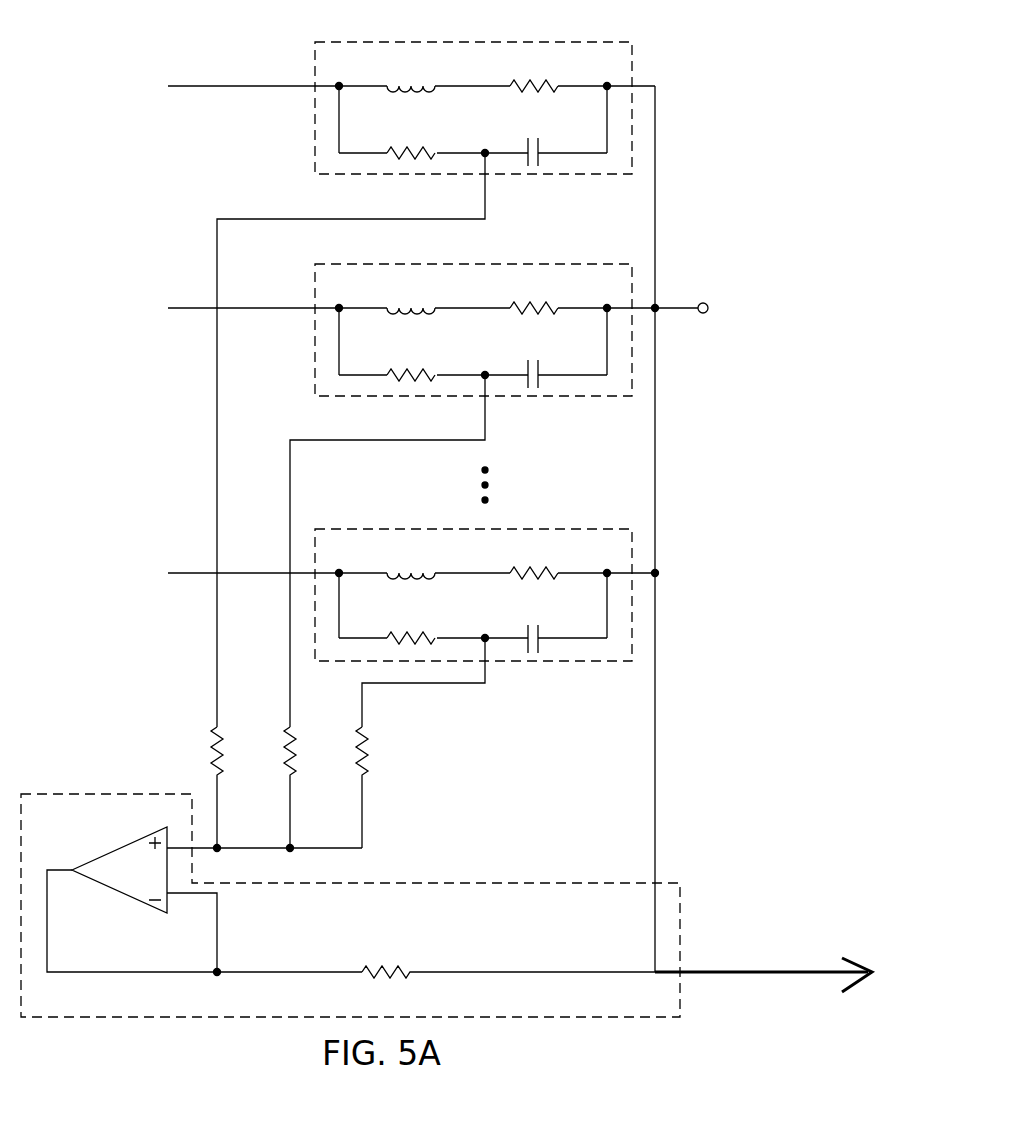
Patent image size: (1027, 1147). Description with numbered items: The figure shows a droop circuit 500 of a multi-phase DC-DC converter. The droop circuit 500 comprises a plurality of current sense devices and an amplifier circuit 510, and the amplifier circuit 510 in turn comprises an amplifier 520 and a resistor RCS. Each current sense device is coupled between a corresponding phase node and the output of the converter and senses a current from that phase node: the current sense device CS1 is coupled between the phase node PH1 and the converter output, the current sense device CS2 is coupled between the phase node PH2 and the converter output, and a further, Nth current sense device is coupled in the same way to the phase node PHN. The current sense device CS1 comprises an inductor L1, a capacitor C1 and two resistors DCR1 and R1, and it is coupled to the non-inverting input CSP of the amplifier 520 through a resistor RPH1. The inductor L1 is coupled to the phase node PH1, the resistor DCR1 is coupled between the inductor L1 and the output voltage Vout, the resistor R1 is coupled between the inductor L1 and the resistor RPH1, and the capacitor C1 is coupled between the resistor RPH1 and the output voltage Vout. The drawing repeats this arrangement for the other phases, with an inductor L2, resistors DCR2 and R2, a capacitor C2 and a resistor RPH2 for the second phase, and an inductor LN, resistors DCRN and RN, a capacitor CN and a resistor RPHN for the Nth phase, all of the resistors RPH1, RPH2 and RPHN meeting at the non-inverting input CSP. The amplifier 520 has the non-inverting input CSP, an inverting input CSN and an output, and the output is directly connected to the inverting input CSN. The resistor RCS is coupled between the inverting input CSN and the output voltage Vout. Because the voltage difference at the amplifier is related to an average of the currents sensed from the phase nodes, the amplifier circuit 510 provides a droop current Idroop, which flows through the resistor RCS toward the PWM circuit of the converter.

The droop circuit 500 is at (90, 39).
The amplifier circuit 510 is at (105, 790).
The amplifier 520 is at (120, 845).
The phase node PH1 is at (250, 86).
The phase node PH2 is at (250, 308).
The phase node PHN is at (250, 573).
The current sense device CS1 is at (560, 41).
The current sense device CS2 is at (560, 263).
The inductor L1 is at (393, 84).
The inductor L2 is at (393, 306).
The inductor LN is at (393, 571).
The resistor DCR1 is at (522, 84).
The resistor DCR2 is at (522, 306).
The resistor DCRN is at (522, 571).
The resistor R1 is at (396, 152).
The resistor R2 is at (396, 374).
The resistor RN is at (396, 637).
The capacitor C1 is at (536, 142).
The capacitor C2 is at (536, 364).
The capacitor CN is at (536, 628).
The resistor RPH1 is at (225, 752).
The resistor RPH2 is at (297, 752).
The resistor RPHN is at (370, 752).
The non-inverting input CSP is at (292, 852).
The inverting input CSN is at (218, 975).
The resistor RCS is at (372, 966).
The output voltage Vout is at (703, 310).
The droop current Idroop is at (570, 967).